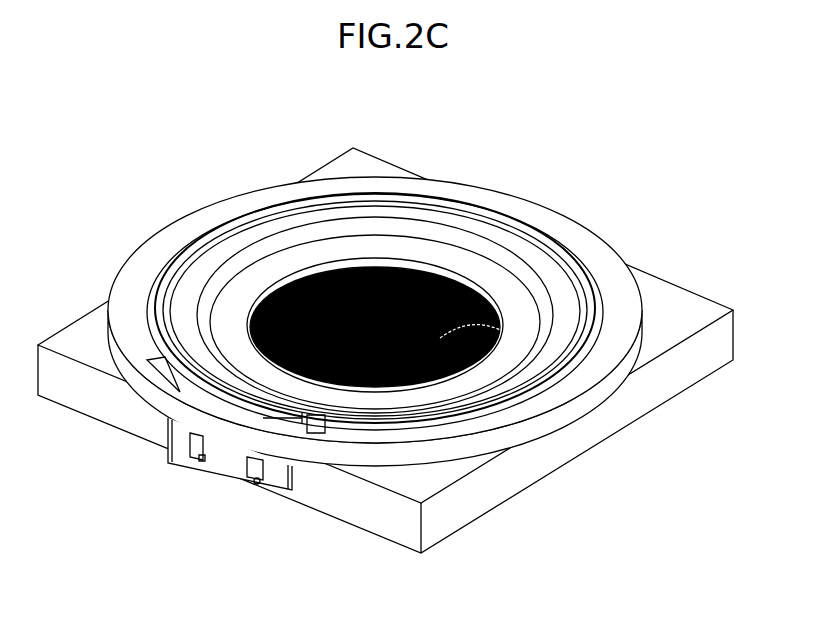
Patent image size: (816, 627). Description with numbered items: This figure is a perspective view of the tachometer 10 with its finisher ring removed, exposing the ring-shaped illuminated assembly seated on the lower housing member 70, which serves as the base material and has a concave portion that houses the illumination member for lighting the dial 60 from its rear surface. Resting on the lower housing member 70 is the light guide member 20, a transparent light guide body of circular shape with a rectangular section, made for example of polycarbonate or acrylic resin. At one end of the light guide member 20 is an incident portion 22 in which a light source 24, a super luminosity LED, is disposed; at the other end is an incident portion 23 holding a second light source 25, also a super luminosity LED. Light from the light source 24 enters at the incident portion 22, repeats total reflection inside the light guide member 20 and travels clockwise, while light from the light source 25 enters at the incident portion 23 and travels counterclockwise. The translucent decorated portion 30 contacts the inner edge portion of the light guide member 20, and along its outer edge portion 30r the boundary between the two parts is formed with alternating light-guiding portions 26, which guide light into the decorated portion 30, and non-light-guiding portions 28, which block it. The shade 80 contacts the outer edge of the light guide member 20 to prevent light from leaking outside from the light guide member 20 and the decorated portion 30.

The tachometer 10 is at (617, 127).
The light guide member 20 is at (300, 422).
The incident portion 22 is at (198, 458).
The incident portion 23 is at (256, 481).
The light source 24 is at (198, 456).
The light source 25 is at (257, 487).
The light-guiding portion 26 is at (380, 186).
The non-light-guiding portion 28 is at (480, 190).
The decorated portion 30 is at (555, 267).
The outer edge portion 30r is at (522, 198).
The dial 60 is at (500, 330).
The lower housing member 70 is at (695, 316).
The shade 80 is at (632, 318).